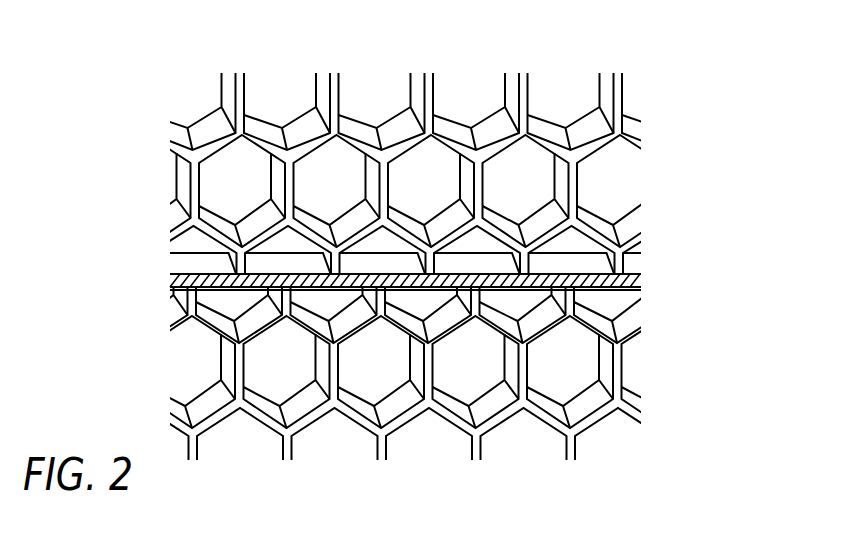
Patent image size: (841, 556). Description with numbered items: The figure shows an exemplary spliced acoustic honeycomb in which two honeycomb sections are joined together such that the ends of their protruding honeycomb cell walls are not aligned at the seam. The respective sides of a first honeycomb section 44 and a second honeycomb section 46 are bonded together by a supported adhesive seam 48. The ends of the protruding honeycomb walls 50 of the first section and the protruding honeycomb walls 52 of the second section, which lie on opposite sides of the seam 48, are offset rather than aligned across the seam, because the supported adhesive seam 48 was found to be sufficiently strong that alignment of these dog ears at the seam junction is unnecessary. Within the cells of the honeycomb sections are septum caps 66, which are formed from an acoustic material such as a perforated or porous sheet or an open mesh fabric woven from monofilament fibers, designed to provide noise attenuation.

The first honeycomb section 44 is at (635, 117).
The second honeycomb section 46 is at (622, 358).
The supported adhesive seam 48 is at (597, 284).
The protruding honeycomb walls 50 is at (240, 266).
The protruding honeycomb walls 52 is at (192, 297).
The septum cap 66 is at (573, 90).